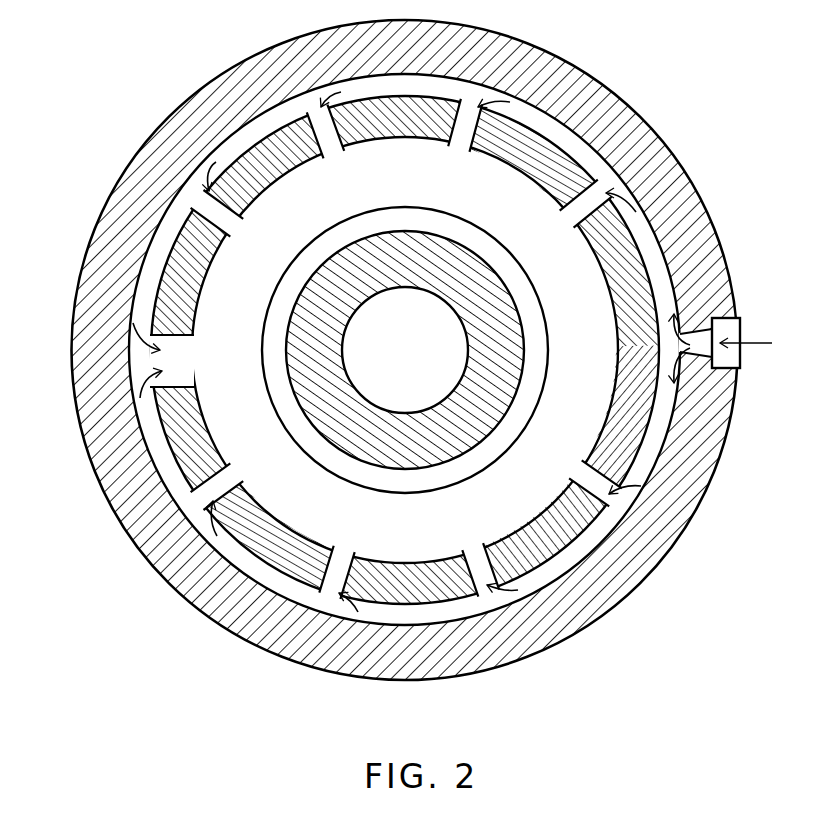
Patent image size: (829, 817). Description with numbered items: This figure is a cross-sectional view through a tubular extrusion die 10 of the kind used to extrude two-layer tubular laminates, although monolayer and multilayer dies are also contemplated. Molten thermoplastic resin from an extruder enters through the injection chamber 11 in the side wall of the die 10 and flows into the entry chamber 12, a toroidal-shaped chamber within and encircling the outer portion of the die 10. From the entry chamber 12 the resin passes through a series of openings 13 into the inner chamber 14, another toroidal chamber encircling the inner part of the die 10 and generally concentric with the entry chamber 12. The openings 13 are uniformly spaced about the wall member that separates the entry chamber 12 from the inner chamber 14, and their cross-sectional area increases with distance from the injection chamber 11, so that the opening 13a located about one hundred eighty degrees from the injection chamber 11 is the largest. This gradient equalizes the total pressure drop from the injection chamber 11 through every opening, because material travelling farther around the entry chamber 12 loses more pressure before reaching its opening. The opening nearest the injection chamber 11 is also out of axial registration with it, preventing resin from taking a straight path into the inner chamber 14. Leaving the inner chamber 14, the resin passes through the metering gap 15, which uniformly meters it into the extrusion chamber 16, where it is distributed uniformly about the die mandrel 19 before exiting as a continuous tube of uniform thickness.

The tubular extrusion die 10 is at (126, 164).
The injection chamber 11 is at (738, 325).
The entry chamber 12 is at (652, 245).
The openings 13 is at (590, 186).
The opening 13a is at (148, 362).
The inner chamber 14 is at (278, 421).
The metering gap 15 is at (434, 543).
The extrusion chamber 16 is at (493, 453).
The die mandrel 19 is at (354, 444).